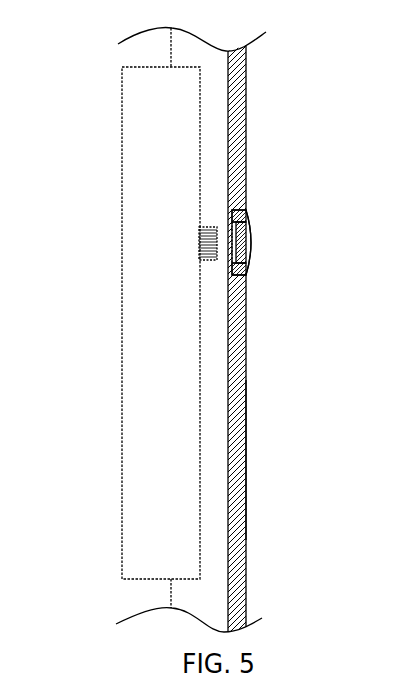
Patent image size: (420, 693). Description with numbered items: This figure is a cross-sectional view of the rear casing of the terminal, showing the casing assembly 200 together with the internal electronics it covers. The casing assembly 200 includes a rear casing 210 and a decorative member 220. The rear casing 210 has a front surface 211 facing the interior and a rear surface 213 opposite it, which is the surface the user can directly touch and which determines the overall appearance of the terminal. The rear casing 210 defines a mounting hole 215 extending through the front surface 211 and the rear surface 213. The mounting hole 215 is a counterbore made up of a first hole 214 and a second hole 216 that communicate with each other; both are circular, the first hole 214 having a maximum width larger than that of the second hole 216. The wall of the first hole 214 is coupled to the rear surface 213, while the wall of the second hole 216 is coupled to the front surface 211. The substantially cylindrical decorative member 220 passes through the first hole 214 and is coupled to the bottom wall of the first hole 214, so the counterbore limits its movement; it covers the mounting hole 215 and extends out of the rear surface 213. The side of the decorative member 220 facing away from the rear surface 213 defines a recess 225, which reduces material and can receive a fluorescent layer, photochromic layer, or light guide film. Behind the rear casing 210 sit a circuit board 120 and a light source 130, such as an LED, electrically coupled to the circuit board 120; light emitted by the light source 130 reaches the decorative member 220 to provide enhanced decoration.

The circuit board 120 is at (136, 499).
The light source 130 is at (200, 253).
The casing assembly 200 is at (193, 340).
The rear casing 210 is at (246, 168).
The front surface 211 is at (228, 367).
The rear surface 213 is at (246, 452).
The first hole 214 is at (246, 258).
The mounting hole 215 is at (244, 206).
The second hole 216 is at (246, 228).
The decorative member 220 is at (315, 261).
The recess 225 is at (249, 243).